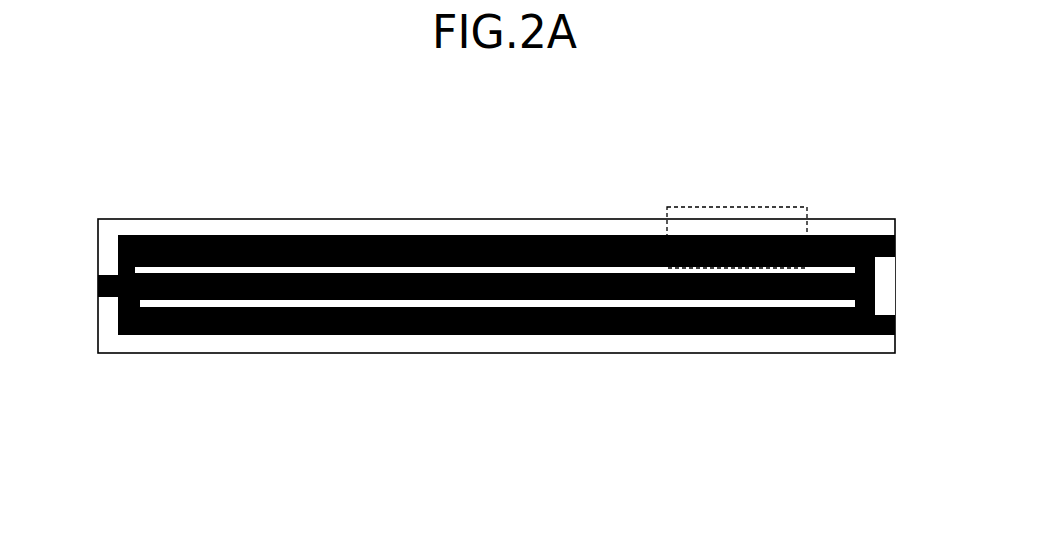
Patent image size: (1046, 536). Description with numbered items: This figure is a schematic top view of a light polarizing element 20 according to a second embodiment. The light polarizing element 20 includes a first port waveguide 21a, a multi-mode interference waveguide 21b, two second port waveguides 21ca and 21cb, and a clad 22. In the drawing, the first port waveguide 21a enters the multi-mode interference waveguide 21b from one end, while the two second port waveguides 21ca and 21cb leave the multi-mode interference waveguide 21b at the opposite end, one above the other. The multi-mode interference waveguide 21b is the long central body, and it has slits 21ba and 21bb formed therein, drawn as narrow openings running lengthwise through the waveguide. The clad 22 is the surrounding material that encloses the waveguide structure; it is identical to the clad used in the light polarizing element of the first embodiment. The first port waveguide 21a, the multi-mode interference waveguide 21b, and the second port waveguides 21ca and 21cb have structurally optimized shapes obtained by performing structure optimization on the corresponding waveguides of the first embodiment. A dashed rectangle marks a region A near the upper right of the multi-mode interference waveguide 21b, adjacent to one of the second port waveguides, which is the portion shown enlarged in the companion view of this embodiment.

The light polarizing element 20 is at (499, 268).
The first port waveguide 21a is at (110, 271).
The multi-mode interference waveguide 21b is at (499, 288).
The slit 21ba is at (549, 304).
The slit 21bb is at (630, 271).
The second port waveguide 21ca is at (880, 234).
The second port waveguide 21cb is at (887, 337).
The clad 22 is at (262, 345).
The region A is at (736, 206).